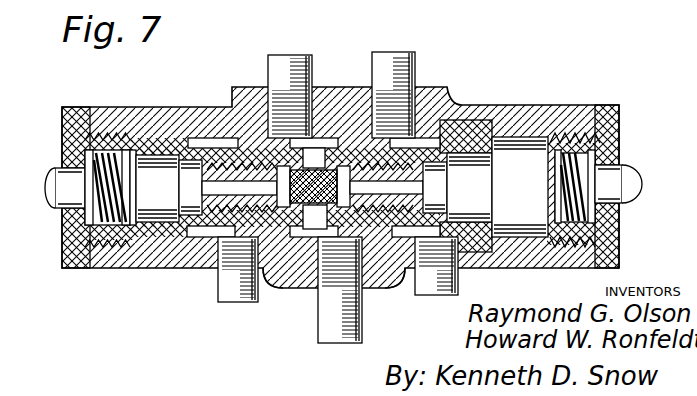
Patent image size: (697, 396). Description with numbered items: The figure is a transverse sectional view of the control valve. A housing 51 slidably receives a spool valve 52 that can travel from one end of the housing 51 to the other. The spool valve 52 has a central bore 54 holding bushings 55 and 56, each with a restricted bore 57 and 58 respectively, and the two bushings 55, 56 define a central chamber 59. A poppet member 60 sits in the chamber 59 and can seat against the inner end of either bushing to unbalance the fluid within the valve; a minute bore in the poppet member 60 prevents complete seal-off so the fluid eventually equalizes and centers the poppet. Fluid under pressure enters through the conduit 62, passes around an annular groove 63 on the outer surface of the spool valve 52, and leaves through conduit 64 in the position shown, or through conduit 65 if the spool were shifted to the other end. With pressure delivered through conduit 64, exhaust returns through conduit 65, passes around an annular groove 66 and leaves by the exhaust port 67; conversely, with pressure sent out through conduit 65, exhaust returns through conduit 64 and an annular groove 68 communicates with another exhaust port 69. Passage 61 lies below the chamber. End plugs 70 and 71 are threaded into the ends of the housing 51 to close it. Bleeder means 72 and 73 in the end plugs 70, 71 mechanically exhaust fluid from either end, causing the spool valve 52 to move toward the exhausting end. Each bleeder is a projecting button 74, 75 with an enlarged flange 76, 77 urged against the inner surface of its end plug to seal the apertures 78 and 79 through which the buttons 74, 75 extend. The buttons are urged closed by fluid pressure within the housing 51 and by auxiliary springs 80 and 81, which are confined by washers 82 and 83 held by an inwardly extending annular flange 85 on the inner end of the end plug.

The housing 51 is at (174, 270).
The spool valve 52 is at (138, 235).
The central bore 54 is at (196, 212).
The bushing 55 is at (268, 272).
The bushing 56 is at (382, 268).
The restricted bore 57 is at (206, 133).
The restricted bore 58 is at (422, 147).
The central chamber 59 is at (343, 170).
The poppet member 60 is at (313, 168).
The valve outlet passage 61 is at (311, 230).
The conduit 62 is at (333, 336).
The annular groove 63 is at (293, 140).
The conduit 64 is at (286, 58).
The conduit 65 is at (413, 60).
The annular groove 66 is at (437, 145).
The exhaust port 67 is at (433, 288).
The annular groove 68 is at (213, 143).
The exhaust port 69 is at (228, 299).
The end plug 70 is at (64, 254).
The end plug 71 is at (620, 246).
The bleeder means 72 is at (62, 213).
The bleeder means 73 is at (627, 162).
The projecting button 74 is at (60, 188).
The projecting button 75 is at (623, 181).
The enlarged flange 76 is at (95, 133).
The enlarged flange 77 is at (618, 135).
The aperture 78 is at (72, 168).
The aperture 79 is at (628, 205).
The auxiliary spring 80 is at (100, 235).
The auxiliary spring 81 is at (152, 133).
The washer 82 is at (130, 170).
The washer 83 is at (557, 167).
The annular flange 85 is at (553, 163).